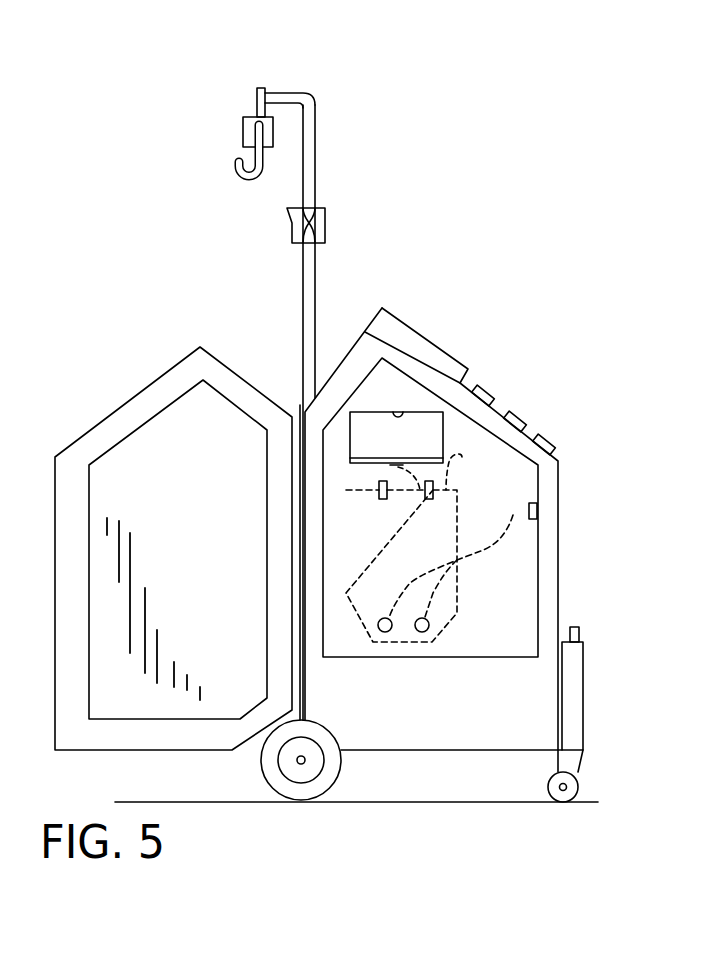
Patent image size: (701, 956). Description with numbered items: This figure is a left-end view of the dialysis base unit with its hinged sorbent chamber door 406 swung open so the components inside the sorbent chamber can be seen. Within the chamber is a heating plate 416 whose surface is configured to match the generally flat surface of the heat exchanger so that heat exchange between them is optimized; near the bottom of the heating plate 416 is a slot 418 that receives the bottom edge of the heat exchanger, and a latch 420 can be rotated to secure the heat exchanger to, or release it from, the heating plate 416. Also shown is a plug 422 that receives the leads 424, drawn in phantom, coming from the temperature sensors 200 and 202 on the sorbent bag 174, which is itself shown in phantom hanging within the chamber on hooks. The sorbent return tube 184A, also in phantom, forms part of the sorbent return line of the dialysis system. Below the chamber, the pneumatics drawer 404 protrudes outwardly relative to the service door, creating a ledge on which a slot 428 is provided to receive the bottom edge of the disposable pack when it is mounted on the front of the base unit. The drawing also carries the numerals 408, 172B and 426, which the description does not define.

The hook 408 is at (243, 139).
The clamp 172B is at (325, 232).
The hinged sorbent chamber door 406 is at (142, 394).
The heating plate 416 is at (490, 402).
The slot 418 is at (432, 431).
The latch 420 is at (398, 410).
The sorbent return tube 184A is at (392, 474).
The connectors 426 is at (430, 500).
The sorbent bag 174 is at (347, 593).
The leads 424 is at (513, 515).
The plug 422 is at (538, 513).
The temperature sensor 200 is at (388, 632).
The temperature sensor 202 is at (428, 630).
The pneumatics drawer 404 is at (583, 732).
The slot 428 is at (565, 630).